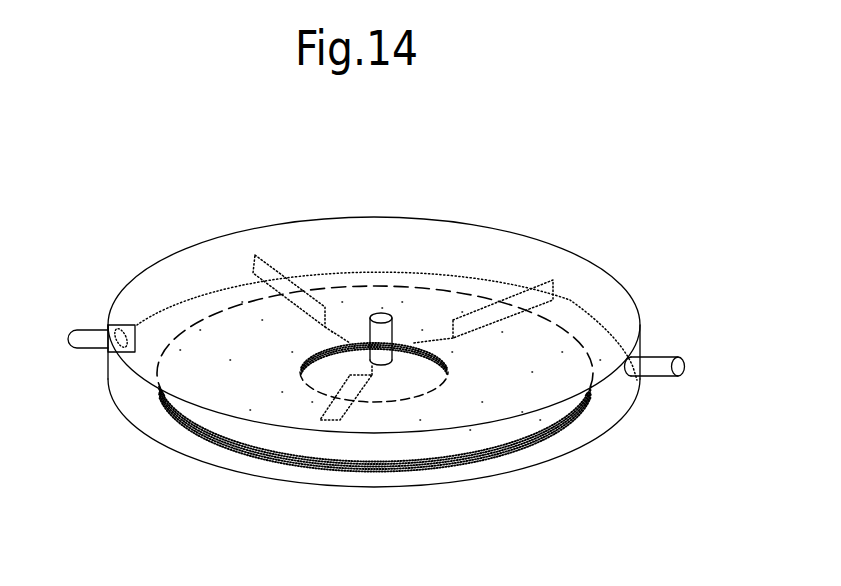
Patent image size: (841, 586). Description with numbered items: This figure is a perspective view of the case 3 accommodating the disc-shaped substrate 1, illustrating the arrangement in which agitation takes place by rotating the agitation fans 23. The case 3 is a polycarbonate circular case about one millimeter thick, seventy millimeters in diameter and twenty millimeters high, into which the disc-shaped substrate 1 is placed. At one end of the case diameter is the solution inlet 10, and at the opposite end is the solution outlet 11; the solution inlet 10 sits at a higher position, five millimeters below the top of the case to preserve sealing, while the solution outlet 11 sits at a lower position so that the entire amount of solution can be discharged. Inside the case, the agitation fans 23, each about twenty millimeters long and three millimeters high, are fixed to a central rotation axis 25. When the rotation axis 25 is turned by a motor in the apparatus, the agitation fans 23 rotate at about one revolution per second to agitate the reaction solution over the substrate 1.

The disc-shaped substrate 1 is at (188, 423).
The case 3 is at (440, 219).
The solution inlet 10 is at (655, 355).
The solution outlet 11 is at (95, 328).
The agitation fans 23 is at (263, 272).
The rotation axis 25 is at (380, 315).